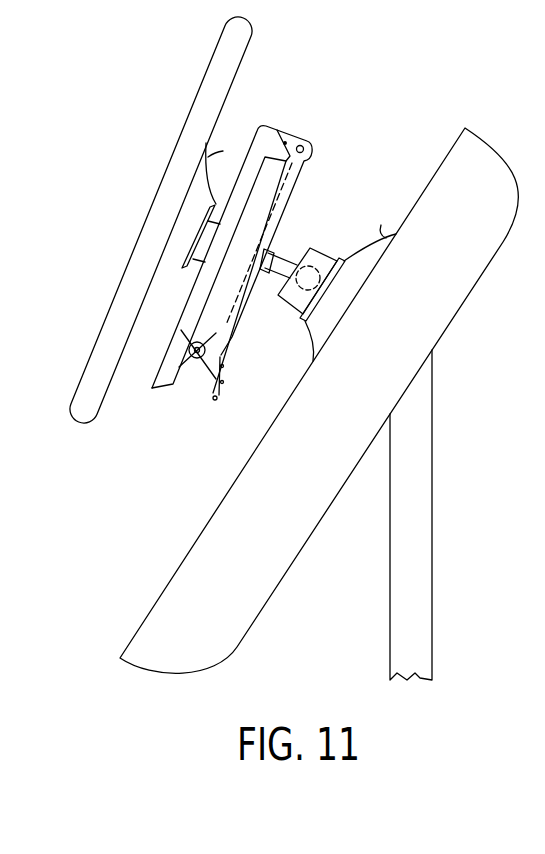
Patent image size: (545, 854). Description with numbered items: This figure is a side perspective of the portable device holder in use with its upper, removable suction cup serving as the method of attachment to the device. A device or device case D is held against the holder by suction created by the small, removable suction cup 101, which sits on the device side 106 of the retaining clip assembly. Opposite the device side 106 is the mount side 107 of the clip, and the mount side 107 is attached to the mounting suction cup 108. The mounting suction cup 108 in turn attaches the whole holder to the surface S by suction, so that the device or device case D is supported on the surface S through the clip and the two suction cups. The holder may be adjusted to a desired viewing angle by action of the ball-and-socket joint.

The device or device case D is at (186, 103).
The surface S is at (154, 595).
The small, removable suction cup 101 is at (154, 299).
The device side 106 is at (276, 115).
The mount side 107 is at (315, 131).
The mounting suction cup 108 is at (359, 255).